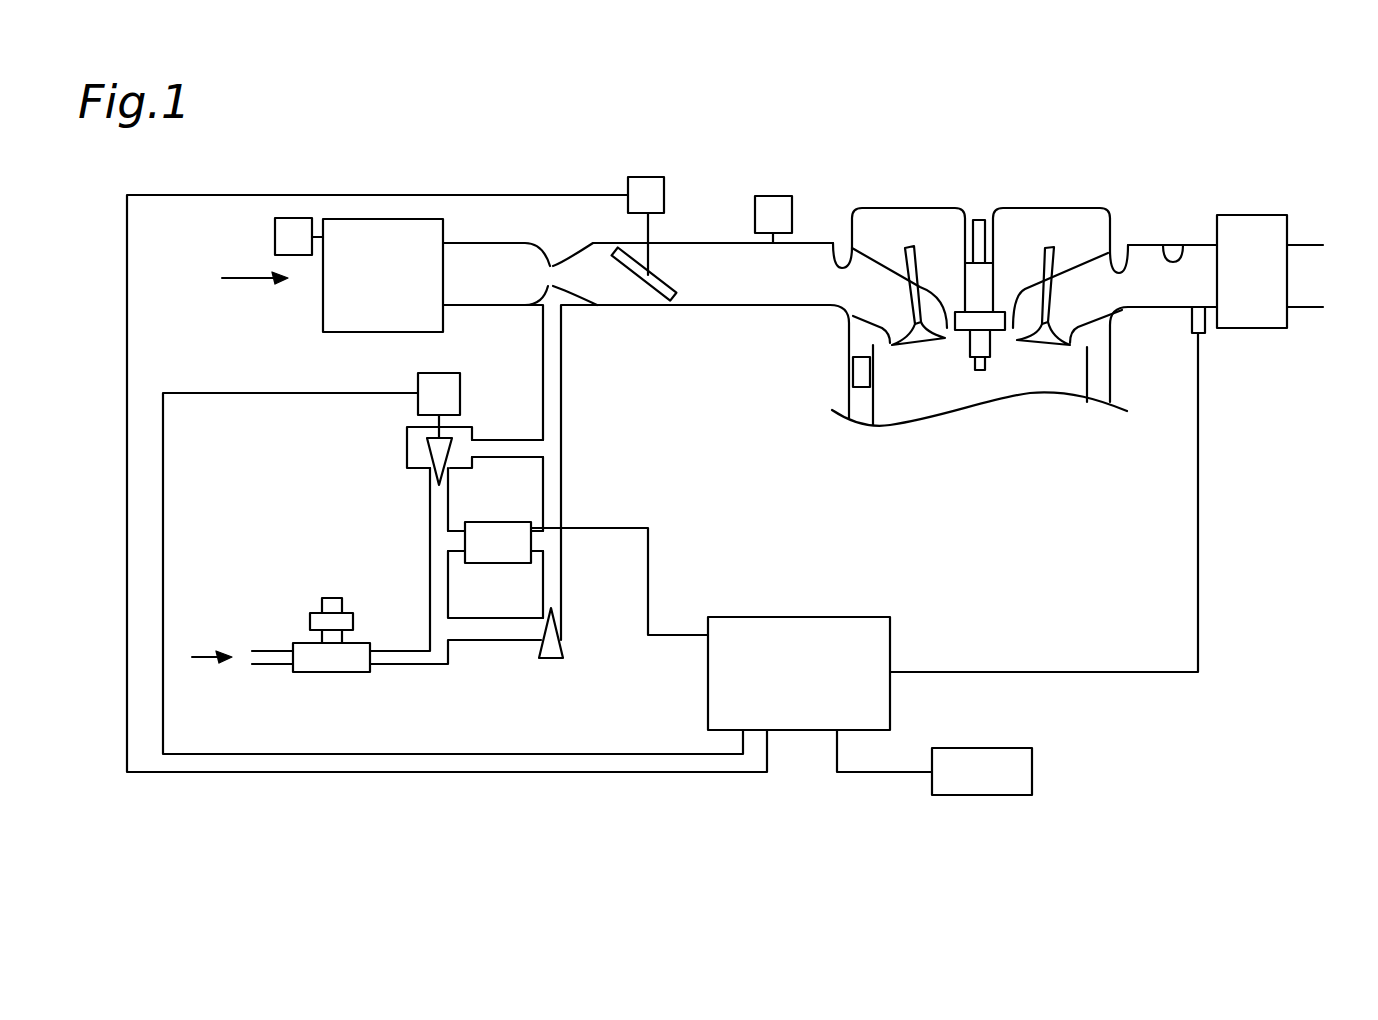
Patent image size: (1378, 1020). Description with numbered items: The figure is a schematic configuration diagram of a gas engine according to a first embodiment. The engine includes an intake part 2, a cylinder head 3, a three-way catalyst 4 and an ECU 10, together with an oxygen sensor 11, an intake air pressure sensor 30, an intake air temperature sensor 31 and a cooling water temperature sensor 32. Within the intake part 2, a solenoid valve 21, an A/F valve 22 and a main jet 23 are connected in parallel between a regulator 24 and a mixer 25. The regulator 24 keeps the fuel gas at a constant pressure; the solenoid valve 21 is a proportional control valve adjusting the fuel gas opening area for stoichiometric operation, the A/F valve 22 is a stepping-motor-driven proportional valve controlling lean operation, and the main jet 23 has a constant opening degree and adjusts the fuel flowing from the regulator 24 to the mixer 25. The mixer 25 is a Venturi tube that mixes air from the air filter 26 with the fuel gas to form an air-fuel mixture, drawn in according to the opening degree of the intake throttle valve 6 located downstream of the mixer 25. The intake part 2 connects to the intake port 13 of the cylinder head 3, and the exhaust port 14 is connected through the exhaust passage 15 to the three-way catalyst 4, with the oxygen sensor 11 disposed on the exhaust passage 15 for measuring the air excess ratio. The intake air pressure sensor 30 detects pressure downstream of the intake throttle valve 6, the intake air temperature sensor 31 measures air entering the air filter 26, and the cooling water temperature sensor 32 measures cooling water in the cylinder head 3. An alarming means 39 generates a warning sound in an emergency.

The intake part 2 is at (584, 428).
The cylinder head 3 is at (912, 208).
The three-way catalyst 4 is at (1253, 215).
The intake throttle valve 6 is at (660, 280).
The ECU 10 is at (803, 617).
The oxygen sensor 11 is at (1190, 322).
The intake port 13 is at (850, 250).
The exhaust port 14 is at (1128, 243).
The exhaust passage 15 is at (1182, 245).
The solenoid valve 21 is at (505, 522).
The A/F valve 22 is at (460, 392).
The main jet 23 is at (551, 658).
The regulator 24 is at (330, 672).
The mixer 25 is at (578, 308).
The air filter 26 is at (323, 312).
The intake air pressure sensor 30 is at (773, 196).
The intake air temperature sensor 31 is at (293, 218).
The cooling water temperature sensor 32 is at (861, 387).
The alarming means 39 is at (1032, 770).